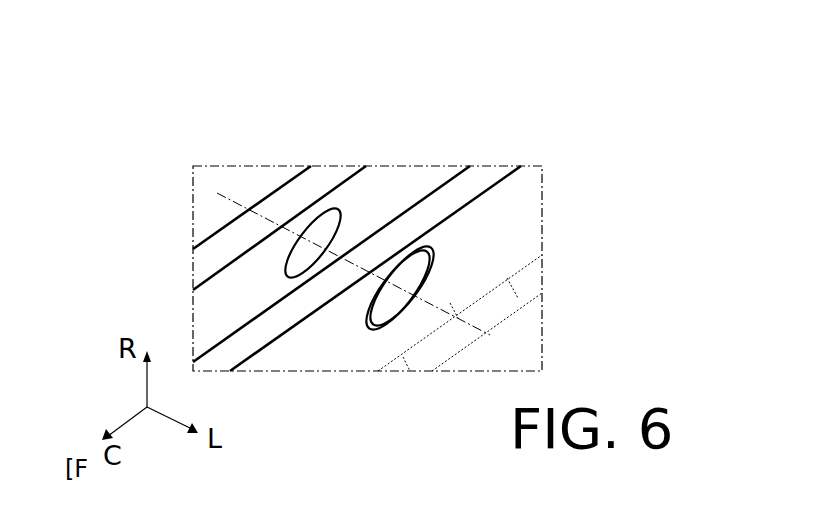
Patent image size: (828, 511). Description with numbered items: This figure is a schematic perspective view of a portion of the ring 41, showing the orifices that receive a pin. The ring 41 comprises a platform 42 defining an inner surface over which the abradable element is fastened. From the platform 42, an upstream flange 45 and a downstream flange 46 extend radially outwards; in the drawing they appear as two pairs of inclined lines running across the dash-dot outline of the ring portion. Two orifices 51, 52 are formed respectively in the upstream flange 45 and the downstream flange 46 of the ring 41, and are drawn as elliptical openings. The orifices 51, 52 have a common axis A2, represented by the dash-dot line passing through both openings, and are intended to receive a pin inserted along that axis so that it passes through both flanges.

The ring 41 is at (457, 117).
The platform 42 is at (482, 348).
The upstream flange 45 is at (323, 170).
The downstream flange 46 is at (472, 175).
The orifice 51 is at (323, 225).
The orifice 52 is at (407, 268).
The common axis A2 is at (217, 193).